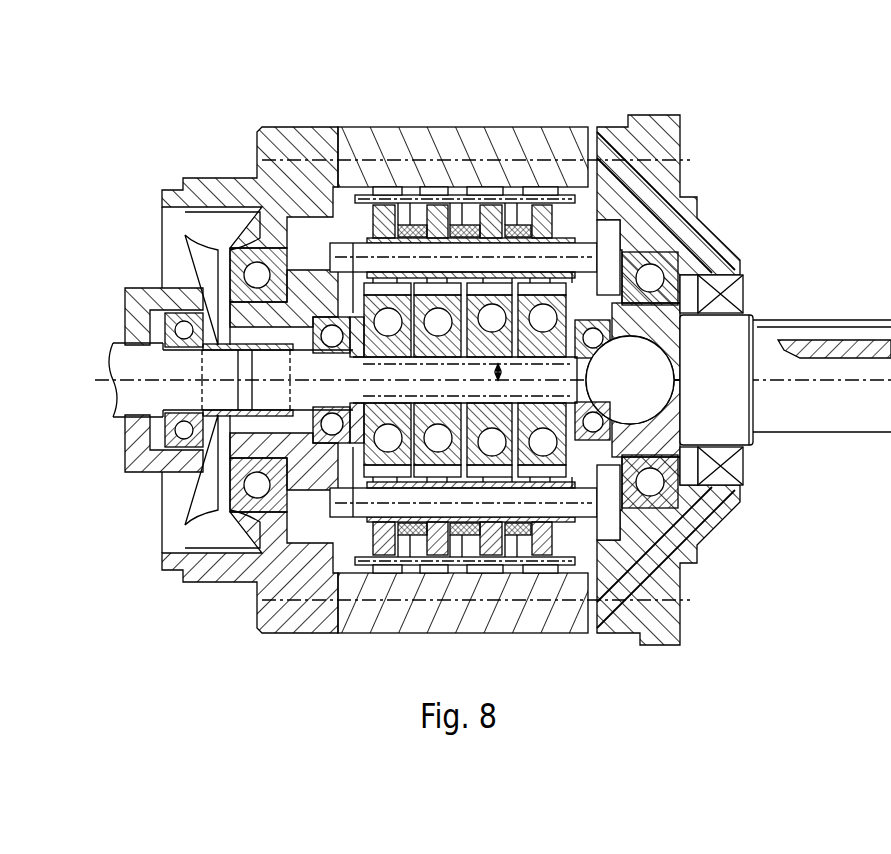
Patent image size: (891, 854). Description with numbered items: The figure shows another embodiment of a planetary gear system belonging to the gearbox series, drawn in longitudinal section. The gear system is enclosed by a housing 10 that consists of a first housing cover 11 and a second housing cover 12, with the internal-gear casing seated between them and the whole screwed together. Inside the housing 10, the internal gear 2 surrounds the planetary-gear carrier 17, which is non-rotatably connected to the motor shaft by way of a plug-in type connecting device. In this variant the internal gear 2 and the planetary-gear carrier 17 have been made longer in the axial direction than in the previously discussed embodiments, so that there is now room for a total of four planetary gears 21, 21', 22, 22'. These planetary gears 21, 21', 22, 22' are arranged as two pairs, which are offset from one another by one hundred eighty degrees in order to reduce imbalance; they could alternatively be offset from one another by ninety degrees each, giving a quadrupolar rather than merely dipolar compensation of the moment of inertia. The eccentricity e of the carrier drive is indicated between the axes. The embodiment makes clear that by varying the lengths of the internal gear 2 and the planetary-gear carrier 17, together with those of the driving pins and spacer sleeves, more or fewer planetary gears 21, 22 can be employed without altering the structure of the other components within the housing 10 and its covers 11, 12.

The internal gear 2 is at (483, 112).
The housing 10 is at (493, 337).
The first housing cover 11 is at (262, 148).
The second housing cover 12 is at (676, 140).
The planetary-gear carrier 17 is at (655, 400).
The planetary gear 21 is at (394, 453).
The planetary gear 21' is at (446, 453).
The planetary gear 22 is at (498, 451).
The planetary gear 22' is at (563, 440).
The eccentricity e is at (505, 370).